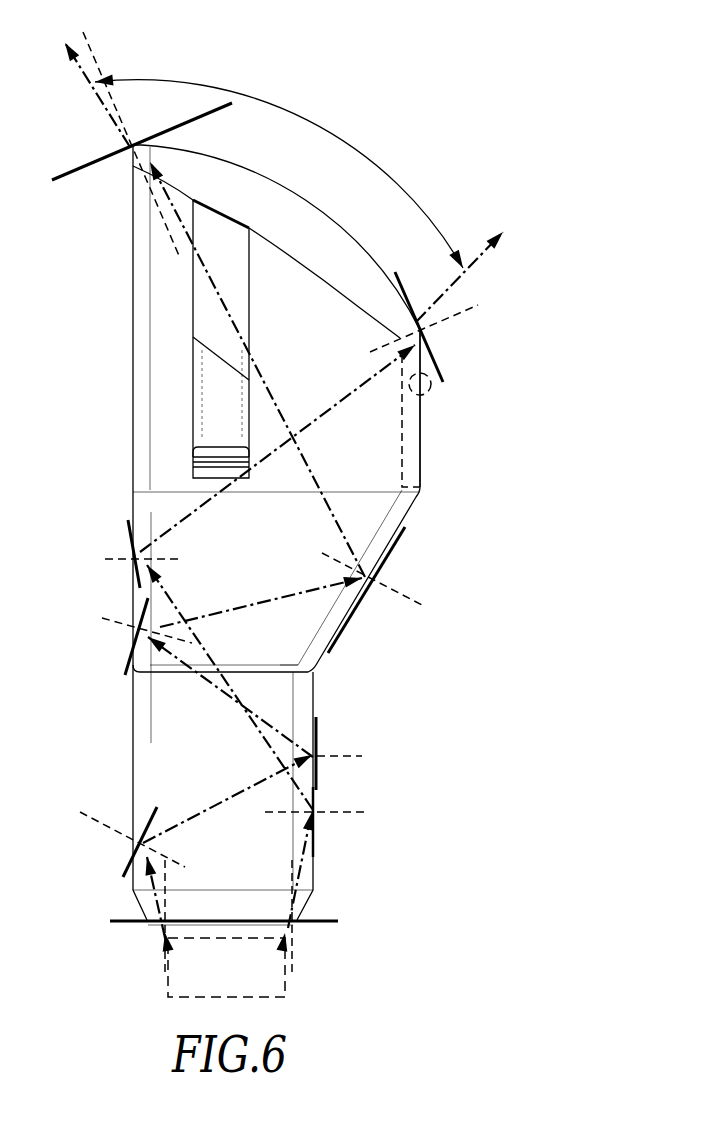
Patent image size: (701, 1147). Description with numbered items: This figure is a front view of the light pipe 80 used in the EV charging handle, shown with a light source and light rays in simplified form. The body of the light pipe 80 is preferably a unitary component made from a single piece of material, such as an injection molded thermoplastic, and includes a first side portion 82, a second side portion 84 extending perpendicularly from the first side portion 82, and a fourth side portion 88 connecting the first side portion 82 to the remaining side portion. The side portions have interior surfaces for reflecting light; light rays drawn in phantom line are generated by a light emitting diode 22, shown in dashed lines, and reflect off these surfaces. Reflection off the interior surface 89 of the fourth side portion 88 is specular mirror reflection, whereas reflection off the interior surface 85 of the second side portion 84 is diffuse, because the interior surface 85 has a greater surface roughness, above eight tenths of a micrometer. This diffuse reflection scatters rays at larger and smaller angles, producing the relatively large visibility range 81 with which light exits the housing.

The light emitting diode 22 is at (288, 972).
The light pipe 80 is at (536, 279).
The visibility range 81 is at (320, 127).
The first side portion 82 is at (378, 455).
The second side portion 84 is at (132, 395).
The interior surface 85 is at (128, 615).
The fourth side portion 88 is at (420, 417).
The interior surface 89 is at (430, 387).